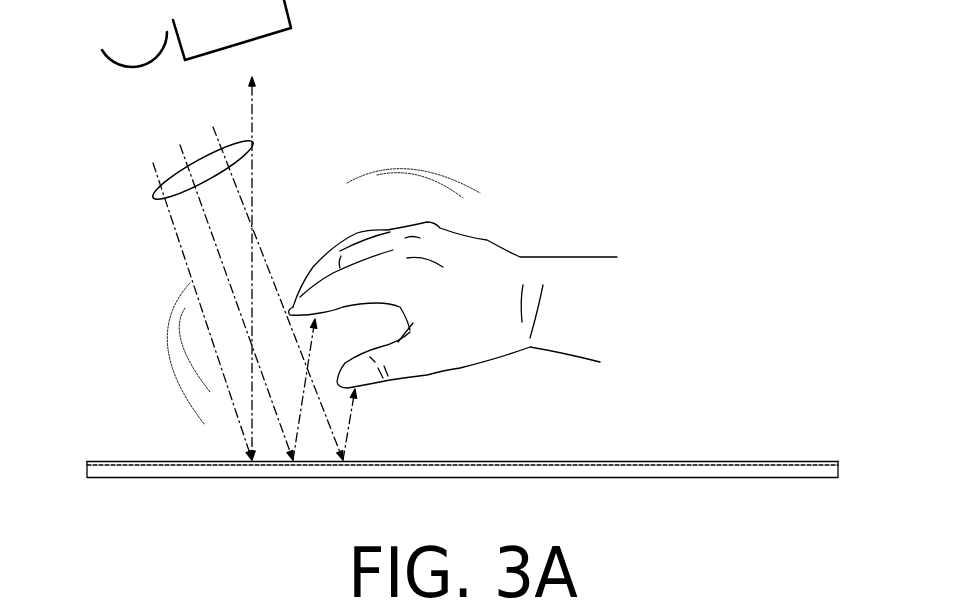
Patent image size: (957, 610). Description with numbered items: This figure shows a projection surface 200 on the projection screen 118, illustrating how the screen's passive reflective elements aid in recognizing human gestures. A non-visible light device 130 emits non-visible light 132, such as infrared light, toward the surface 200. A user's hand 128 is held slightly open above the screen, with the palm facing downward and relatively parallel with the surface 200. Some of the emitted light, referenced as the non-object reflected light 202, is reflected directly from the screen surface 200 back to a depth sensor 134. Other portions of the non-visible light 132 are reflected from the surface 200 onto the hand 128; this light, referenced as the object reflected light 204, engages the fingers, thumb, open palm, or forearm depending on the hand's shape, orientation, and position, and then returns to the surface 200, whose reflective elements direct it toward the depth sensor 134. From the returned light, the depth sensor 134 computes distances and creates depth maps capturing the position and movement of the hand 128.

The projection screen 118 is at (632, 477).
The user's hand 128 is at (487, 240).
The non-visible light device 130 is at (128, 60).
The non-visible light 132 is at (156, 195).
The depth sensor 134 is at (254, 29).
The projection surface 200 is at (708, 462).
The non-object reflected light 202 is at (252, 108).
The object reflected light 204 is at (302, 407).